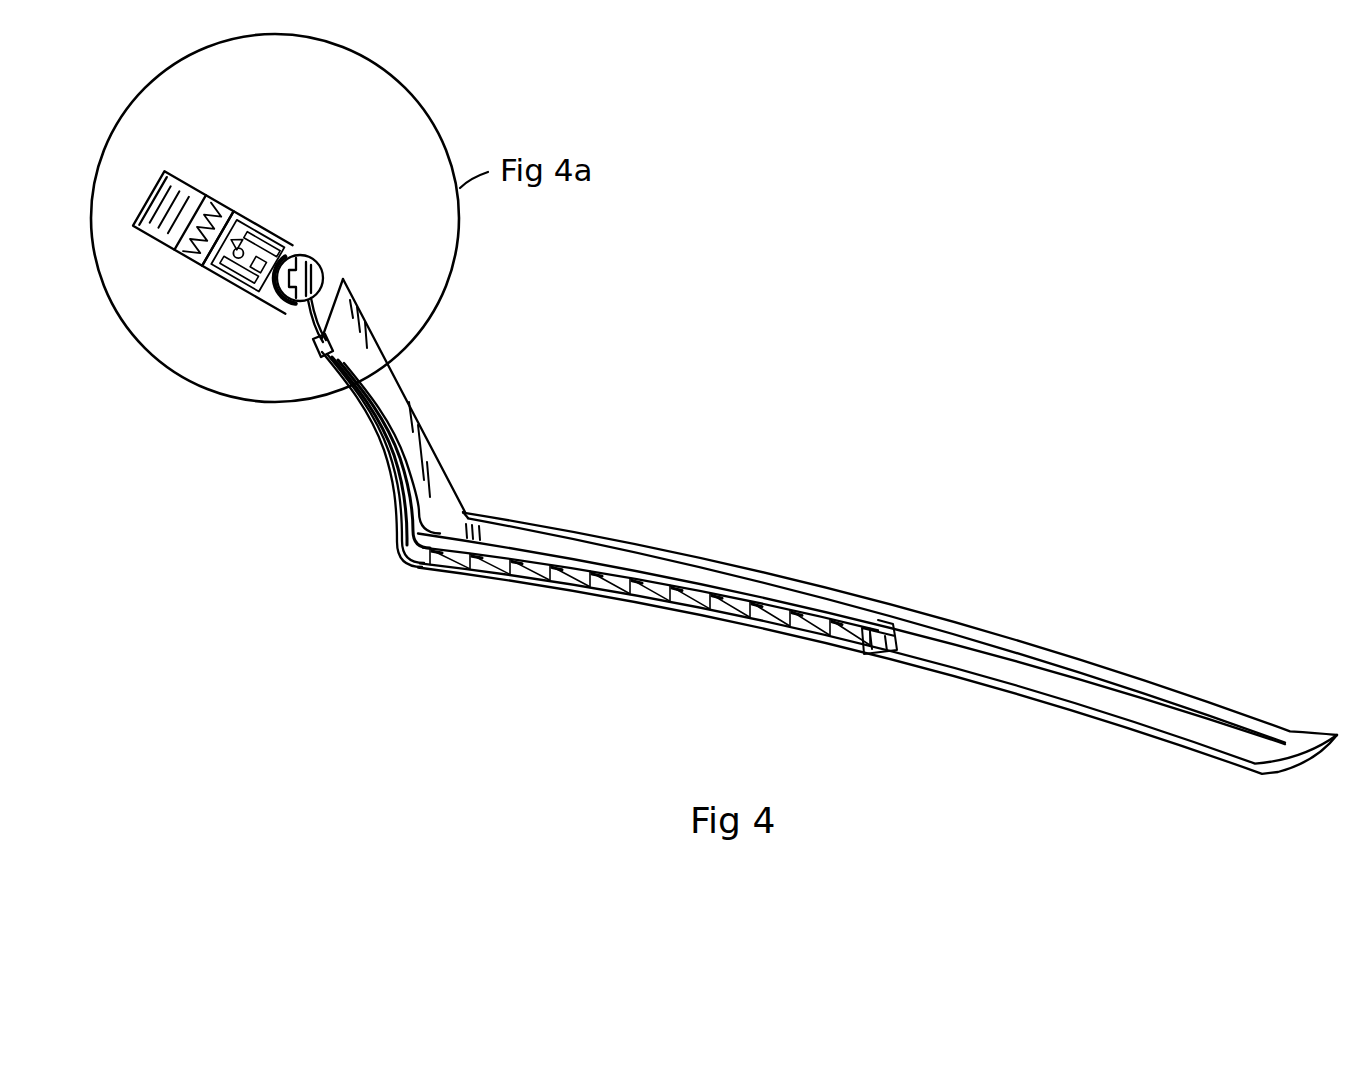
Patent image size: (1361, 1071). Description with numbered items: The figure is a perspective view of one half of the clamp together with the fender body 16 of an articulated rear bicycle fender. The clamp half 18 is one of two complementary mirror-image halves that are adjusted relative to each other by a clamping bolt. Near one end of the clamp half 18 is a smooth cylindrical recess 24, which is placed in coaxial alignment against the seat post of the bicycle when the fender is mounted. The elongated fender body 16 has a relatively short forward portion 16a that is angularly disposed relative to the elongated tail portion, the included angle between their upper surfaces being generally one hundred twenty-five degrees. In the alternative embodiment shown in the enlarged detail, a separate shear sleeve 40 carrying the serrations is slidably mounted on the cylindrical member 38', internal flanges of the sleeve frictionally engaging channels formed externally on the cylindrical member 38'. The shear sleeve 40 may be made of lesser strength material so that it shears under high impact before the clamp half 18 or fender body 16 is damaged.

In FIG. 4, the fender body 16 is at (830, 570).
In FIG. 4, the forward portion 16a is at (420, 385).
In FIG. 4A, the clamp half 18 is at (246, 212).
In FIG. 4A, the smooth cylindrical recess 24 is at (177, 183).
In FIG. 4A, the shear sleeve 40 is at (288, 226).
In FIG. 4A, the cylindrical member 38' is at (340, 226).